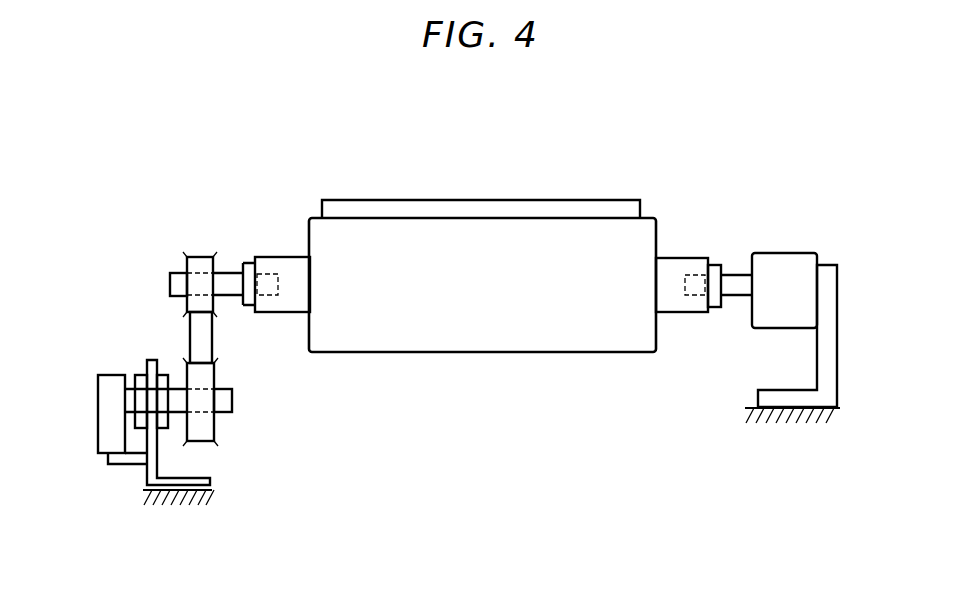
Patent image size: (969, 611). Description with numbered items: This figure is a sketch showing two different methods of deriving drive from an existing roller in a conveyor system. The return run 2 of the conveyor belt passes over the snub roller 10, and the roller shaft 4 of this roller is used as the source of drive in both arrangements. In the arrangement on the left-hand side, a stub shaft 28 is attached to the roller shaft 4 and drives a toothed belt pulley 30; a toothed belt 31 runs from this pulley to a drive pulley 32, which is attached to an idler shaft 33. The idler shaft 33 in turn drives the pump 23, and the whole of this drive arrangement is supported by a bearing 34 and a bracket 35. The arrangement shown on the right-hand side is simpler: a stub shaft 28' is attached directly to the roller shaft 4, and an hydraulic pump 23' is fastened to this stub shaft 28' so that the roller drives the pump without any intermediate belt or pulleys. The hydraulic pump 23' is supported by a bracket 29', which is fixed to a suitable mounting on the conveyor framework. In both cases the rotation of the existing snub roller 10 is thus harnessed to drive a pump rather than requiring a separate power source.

The return run 2 is at (488, 196).
The snub roller 10 is at (508, 355).
The roller shaft 4 is at (272, 254).
The stub shaft 28 is at (269, 346).
The toothed belt pulley 30 is at (185, 254).
The toothed belt 31 is at (186, 335).
The drive pulley 32 is at (213, 446).
The idler shaft 33 is at (235, 412).
The bearing 34 is at (131, 371).
The pump 23 is at (93, 470).
The bracket 35 is at (172, 500).
The stub shaft 28' is at (724, 225).
The hydraulic pump 23' is at (797, 230).
The bracket 29' is at (792, 398).